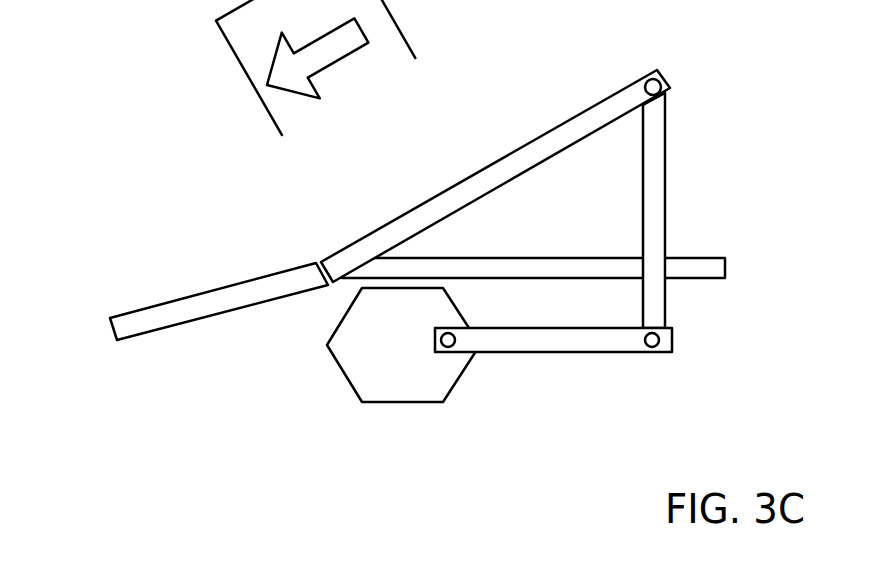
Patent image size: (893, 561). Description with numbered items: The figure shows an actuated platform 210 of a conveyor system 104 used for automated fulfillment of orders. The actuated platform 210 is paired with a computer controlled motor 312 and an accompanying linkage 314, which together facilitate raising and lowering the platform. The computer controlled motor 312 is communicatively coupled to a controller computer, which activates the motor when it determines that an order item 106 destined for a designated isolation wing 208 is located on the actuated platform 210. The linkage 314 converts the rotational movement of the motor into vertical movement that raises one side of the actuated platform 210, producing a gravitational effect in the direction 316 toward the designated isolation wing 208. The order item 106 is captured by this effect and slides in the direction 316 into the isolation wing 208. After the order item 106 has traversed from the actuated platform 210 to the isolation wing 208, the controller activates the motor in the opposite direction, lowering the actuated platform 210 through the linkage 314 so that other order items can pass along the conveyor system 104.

The conveyor system 104 is at (718, 270).
The order item 106 is at (315, 67).
The isolation wing 208 is at (112, 327).
The actuated platform 210 is at (618, 96).
The computer controlled motor 312 is at (370, 380).
The linkage 314 is at (657, 300).
The direction 316 is at (314, 59).